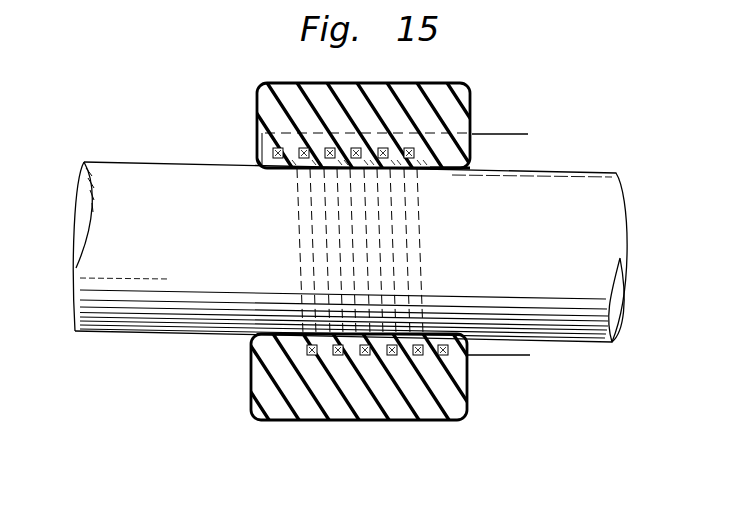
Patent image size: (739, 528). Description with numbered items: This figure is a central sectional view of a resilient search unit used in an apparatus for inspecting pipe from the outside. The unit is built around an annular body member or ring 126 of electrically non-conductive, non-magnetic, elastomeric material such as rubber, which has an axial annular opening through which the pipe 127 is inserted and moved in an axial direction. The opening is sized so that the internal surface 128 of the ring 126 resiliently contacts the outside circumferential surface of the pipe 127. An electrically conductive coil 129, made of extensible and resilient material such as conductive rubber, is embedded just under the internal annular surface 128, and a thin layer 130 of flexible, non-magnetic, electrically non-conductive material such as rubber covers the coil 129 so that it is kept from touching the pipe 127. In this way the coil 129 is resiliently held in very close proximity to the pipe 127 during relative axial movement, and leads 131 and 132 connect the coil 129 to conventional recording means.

The ring 126 is at (257, 110).
The pipe 127 is at (571, 268).
The internal surface 128 is at (445, 170).
The electrically conductive coil 129 is at (258, 154).
The thin layer 130 is at (278, 169).
The lead 131 is at (498, 134).
The lead 132 is at (495, 355).